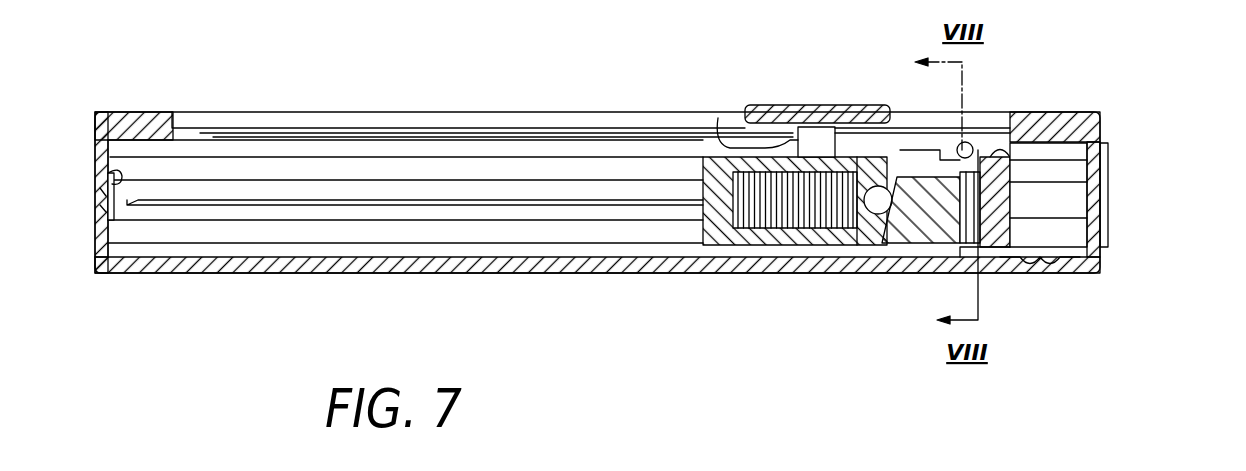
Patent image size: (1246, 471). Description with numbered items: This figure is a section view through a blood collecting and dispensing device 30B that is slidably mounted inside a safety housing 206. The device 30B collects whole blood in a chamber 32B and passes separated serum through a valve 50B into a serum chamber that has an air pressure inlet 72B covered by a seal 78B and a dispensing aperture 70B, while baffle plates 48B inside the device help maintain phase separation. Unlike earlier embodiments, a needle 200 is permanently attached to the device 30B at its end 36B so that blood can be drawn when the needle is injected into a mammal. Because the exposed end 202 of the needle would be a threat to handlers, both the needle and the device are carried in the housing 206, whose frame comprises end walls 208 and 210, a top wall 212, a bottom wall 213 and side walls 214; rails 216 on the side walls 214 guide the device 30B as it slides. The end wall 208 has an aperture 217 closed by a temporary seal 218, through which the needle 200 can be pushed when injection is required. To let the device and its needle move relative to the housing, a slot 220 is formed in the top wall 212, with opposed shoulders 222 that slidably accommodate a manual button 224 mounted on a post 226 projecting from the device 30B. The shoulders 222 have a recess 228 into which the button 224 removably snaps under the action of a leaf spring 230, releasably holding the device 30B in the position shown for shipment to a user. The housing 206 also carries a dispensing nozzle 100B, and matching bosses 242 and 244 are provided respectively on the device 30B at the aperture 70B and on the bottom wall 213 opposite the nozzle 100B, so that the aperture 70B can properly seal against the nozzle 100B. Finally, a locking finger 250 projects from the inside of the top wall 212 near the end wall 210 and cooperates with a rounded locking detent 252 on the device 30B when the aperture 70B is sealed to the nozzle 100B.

The needle 200 is at (490, 200).
The end of needle 202 is at (128, 206).
The safety housing 206 is at (305, 288).
The end wall 208 is at (95, 264).
The end wall 210 is at (1085, 137).
The top wall 212 is at (140, 112).
The bottom wall 213 is at (403, 264).
The side walls 214 is at (558, 213).
The rails 216 is at (323, 230).
The aperture 217 is at (104, 198).
The temporary seal 218 is at (108, 175).
The slot 220 is at (253, 128).
The shoulders 222 is at (493, 133).
The manual button 224 is at (858, 108).
The post 226 is at (820, 105).
The recess 228 is at (908, 128).
The leaf spring 230 is at (718, 118).
The boss 242 is at (970, 262).
The boss 244 is at (1065, 273).
The locking finger 250 is at (1020, 165).
The rounded locking detent 252 is at (1048, 195).
The device 30B is at (850, 270).
The chamber 32B is at (812, 243).
The end of device 36B is at (703, 213).
The baffle plates 48B is at (773, 235).
The valve 50B is at (965, 252).
The dispensing aperture 70B is at (1012, 238).
The air pressure inlet 72B is at (985, 130).
The seal 78B is at (968, 143).
The dispensing nozzle 100B is at (1040, 282).